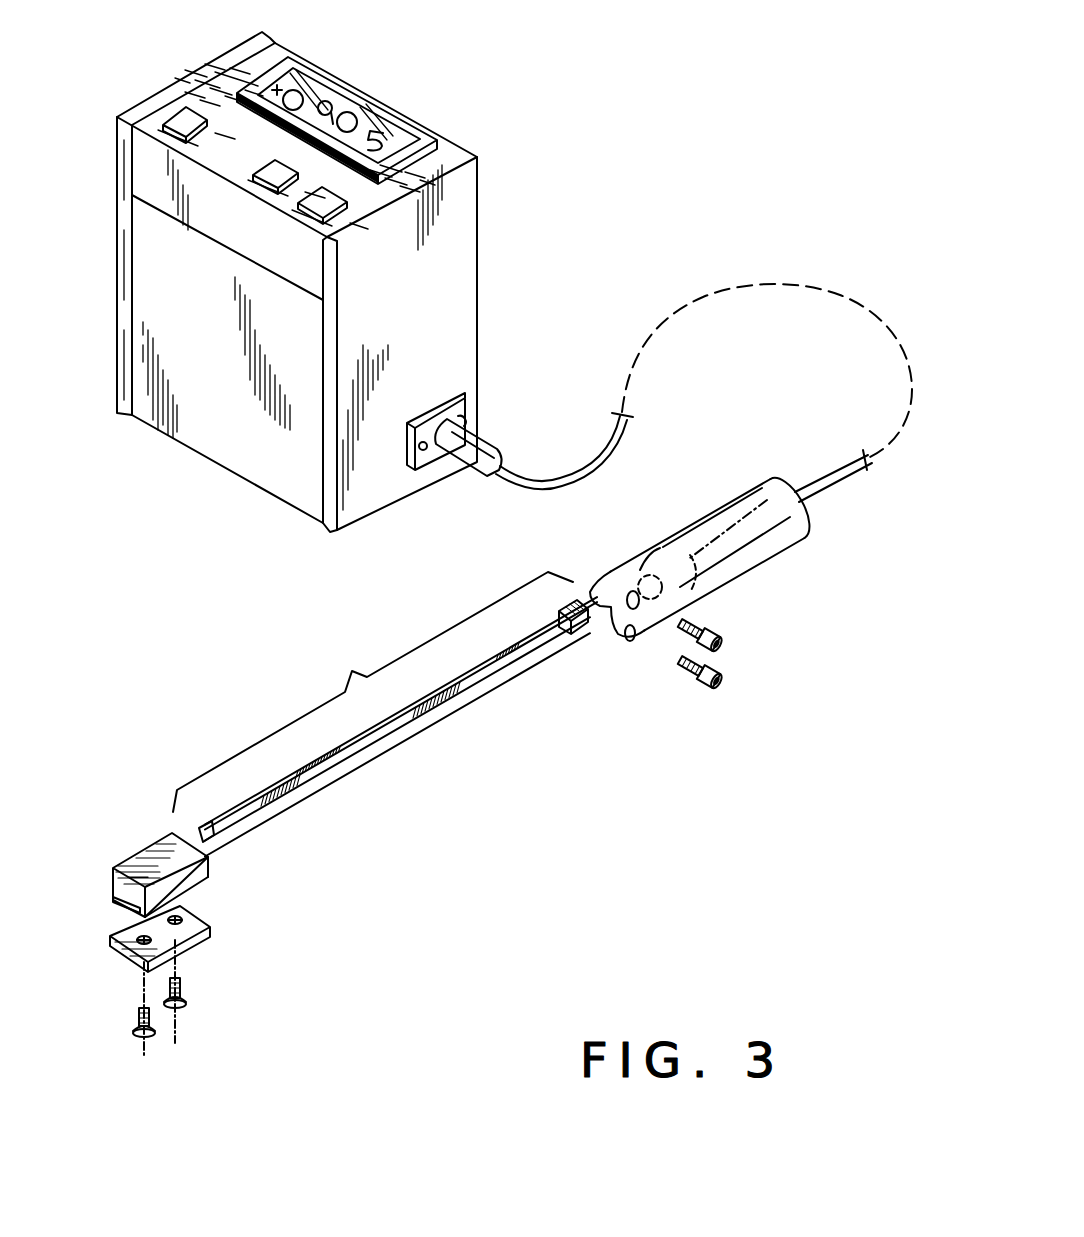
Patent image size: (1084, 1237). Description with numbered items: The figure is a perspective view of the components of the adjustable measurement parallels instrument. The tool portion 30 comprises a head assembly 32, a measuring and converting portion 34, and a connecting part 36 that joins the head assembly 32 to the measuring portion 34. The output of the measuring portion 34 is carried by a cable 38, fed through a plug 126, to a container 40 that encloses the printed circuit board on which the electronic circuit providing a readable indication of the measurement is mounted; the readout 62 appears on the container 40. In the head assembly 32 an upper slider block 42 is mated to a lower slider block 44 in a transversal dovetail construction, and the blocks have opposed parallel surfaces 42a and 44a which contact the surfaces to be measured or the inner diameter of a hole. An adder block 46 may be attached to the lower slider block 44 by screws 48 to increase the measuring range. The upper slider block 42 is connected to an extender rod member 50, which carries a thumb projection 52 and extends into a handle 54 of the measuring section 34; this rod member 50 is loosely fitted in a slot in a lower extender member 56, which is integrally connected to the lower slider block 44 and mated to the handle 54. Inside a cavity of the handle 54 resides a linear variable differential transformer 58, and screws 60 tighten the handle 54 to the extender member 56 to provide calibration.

The tool portion 30 is at (516, 822).
The head assembly 32 is at (155, 818).
The measuring and converting portion 34 is at (632, 553).
The connecting part 36 is at (348, 665).
The cable 38 is at (575, 467).
The container 40 is at (339, 271).
The upper slider block 42 is at (126, 852).
The parallel surface of upper slider block 42a is at (142, 862).
The lower slider block 44 is at (222, 902).
The parallel surface of lower slider block 44a is at (192, 900).
The adder block 46 is at (120, 953).
The screws 48 is at (157, 1036).
The extender rod member 50 is at (487, 677).
The thumb projection 52 is at (587, 640).
The handle 54 is at (773, 553).
The lower extender member 56 is at (380, 760).
The linear variable differential transformer 58 is at (670, 573).
The screws 60 is at (724, 683).
The readout 62 is at (313, 94).
The plug 126 is at (470, 468).